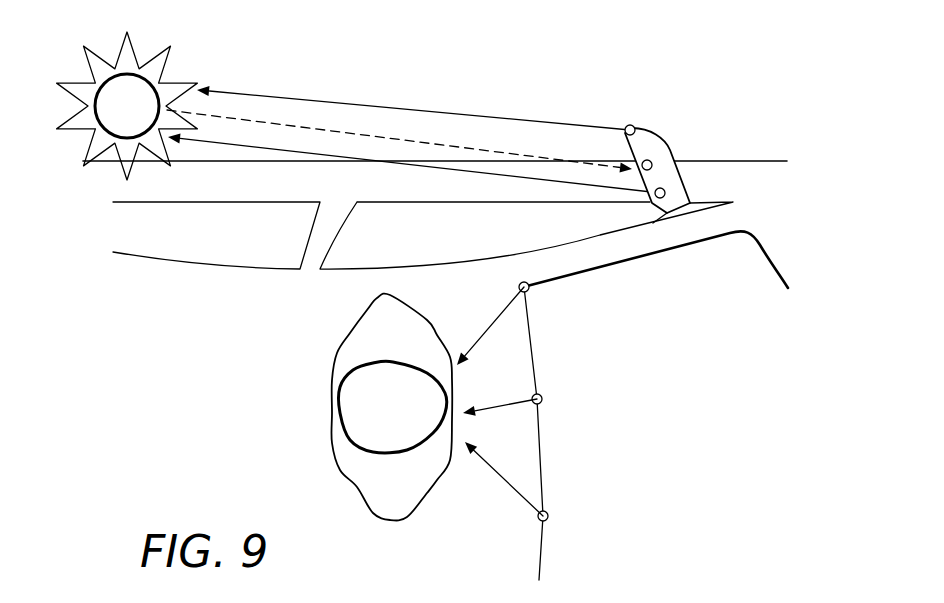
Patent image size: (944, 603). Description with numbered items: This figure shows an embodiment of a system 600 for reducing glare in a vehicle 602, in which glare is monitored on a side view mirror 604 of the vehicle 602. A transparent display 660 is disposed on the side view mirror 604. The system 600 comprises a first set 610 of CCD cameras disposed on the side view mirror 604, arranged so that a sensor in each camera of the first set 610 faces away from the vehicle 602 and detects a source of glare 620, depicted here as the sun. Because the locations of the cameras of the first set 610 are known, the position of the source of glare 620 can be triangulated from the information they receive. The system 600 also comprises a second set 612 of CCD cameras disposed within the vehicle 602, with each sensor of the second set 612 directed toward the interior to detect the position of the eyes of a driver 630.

The system 600 is at (176, 358).
The vehicle 602 is at (766, 205).
The side view mirror 604 is at (667, 150).
The first set of CCD cameras 610 is at (630, 125).
The second set of CCD cameras 612 is at (529, 291).
The source of glare 620 is at (177, 82).
The driver 630 is at (350, 342).
The transparent display 660 is at (625, 143).